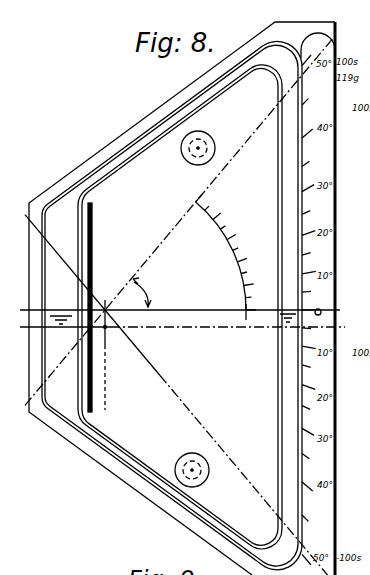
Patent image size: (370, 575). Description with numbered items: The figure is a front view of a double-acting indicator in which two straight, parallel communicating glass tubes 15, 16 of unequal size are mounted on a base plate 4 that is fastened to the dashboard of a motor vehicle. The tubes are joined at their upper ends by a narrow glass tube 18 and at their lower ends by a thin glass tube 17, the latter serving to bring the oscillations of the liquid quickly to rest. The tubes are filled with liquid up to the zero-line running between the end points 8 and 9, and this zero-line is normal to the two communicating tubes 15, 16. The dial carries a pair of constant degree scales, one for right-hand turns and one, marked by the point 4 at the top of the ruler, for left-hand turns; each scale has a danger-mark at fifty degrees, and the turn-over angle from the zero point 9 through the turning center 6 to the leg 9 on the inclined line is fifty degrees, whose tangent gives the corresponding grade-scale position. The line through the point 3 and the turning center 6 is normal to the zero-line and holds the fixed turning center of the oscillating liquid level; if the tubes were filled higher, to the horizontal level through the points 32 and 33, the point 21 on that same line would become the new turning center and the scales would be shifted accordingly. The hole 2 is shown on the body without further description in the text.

The base plate 4 is at (100, 463).
The narrow connecting glass tube 18 is at (141, 140).
The narrow connecting glass tube 17 is at (133, 466).
The e-line point 3 is at (94, 386).
The straight communicating glass tube 15 is at (106, 336).
The straight communicating glass tube 16 is at (284, 333).
The turning center 6 is at (106, 309).
The alternative turning center 21 is at (108, 327).
The alternative zero-line end point 33 is at (239, 256).
The zero-line end point 8 is at (214, 138).
The hole 2 is at (209, 486).
The alternative zero-line end point 32 is at (64, 329).
The zero-line end point and turn-over angle leg 9 is at (258, 512).